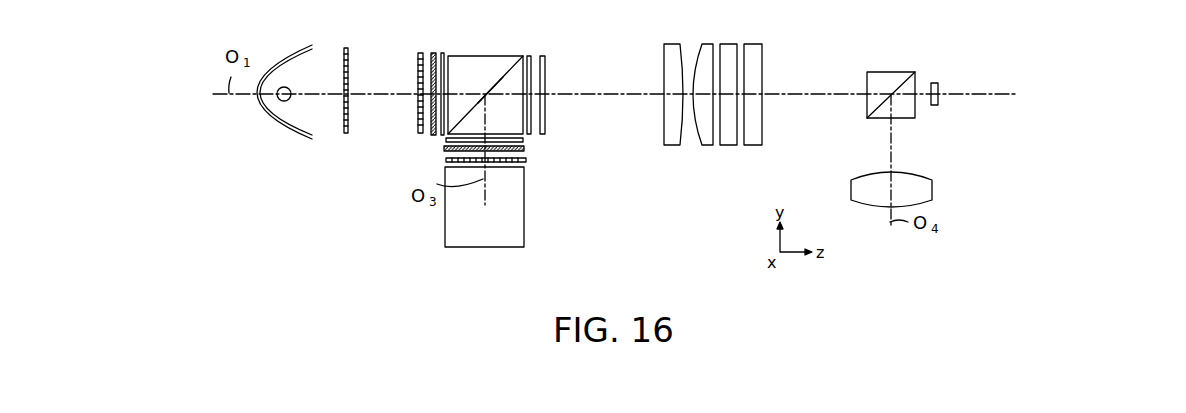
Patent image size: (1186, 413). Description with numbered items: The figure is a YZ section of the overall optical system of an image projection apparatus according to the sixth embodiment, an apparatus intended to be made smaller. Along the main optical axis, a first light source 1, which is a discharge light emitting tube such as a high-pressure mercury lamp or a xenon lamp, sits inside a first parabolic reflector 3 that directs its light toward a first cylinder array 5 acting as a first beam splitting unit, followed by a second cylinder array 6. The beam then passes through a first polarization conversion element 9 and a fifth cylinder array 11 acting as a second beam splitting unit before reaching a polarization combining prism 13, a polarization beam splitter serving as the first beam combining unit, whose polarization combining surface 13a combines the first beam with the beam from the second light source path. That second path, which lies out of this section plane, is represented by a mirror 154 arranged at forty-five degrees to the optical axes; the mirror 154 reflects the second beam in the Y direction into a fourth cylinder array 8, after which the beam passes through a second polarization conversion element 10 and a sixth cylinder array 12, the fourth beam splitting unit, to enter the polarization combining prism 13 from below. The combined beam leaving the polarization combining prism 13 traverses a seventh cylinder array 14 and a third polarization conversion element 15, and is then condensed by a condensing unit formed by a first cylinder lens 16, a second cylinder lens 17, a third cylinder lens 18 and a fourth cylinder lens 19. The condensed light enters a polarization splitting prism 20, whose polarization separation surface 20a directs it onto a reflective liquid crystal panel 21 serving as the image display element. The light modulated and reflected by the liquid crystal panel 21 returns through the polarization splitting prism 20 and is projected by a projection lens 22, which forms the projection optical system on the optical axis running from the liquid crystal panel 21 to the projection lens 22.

The first light source 1 is at (284, 101).
The first parabolic reflector 3 is at (307, 137).
The first cylinder array 5 is at (347, 48).
The second cylinder array 6 is at (418, 53).
The fourth cylinder array 8 is at (528, 160).
The first polarization conversion element 9 is at (433, 53).
The second polarization conversion element 10 is at (526, 149).
The fifth cylinder array 11 is at (442, 53).
The sixth cylinder array 12 is at (525, 141).
The polarization combining prism 13 is at (466, 56).
The polarization combining surface 13a is at (513, 67).
The seventh cylinder array 14 is at (529, 56).
The third polarization conversion element 15 is at (543, 56).
The first cylinder lens 16 is at (670, 146).
The second cylinder lens 17 is at (705, 146).
The third cylinder lens 18 is at (728, 146).
The fourth cylinder lens 19 is at (753, 146).
The polarization splitting prism 20 is at (872, 72).
The polarization separation surface 20a is at (907, 79).
The reflective liquid crystal panel 21 is at (935, 107).
The projection lens 22 is at (933, 187).
The mirror 154 is at (524, 205).